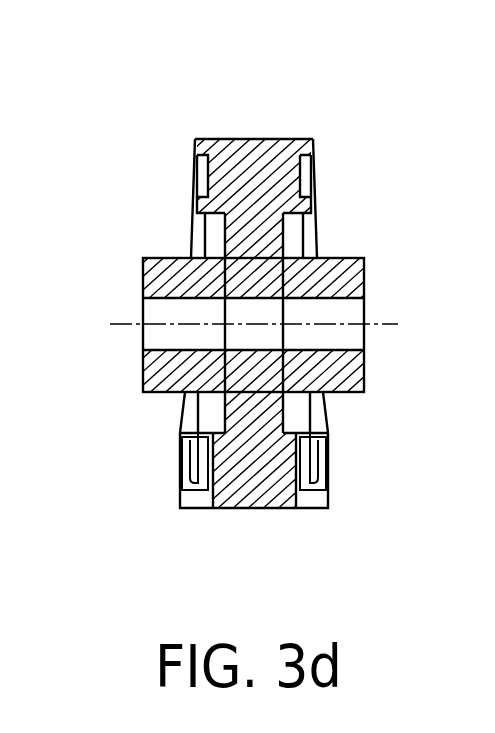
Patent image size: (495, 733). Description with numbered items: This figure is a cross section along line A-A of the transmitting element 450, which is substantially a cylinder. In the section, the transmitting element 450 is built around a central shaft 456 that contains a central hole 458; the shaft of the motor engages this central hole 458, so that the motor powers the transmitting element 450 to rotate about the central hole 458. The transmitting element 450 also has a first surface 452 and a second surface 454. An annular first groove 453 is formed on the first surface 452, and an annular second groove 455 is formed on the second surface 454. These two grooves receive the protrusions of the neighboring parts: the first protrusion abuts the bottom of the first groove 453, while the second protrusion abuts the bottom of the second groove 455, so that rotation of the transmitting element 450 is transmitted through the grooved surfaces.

The transmitting element 450 is at (272, 57).
The first surface 452 is at (328, 502).
The first groove 453 is at (320, 462).
The second surface 454 is at (183, 503).
The second groove 455 is at (192, 460).
The central shaft 456 is at (330, 274).
The central hole 458 is at (332, 317).